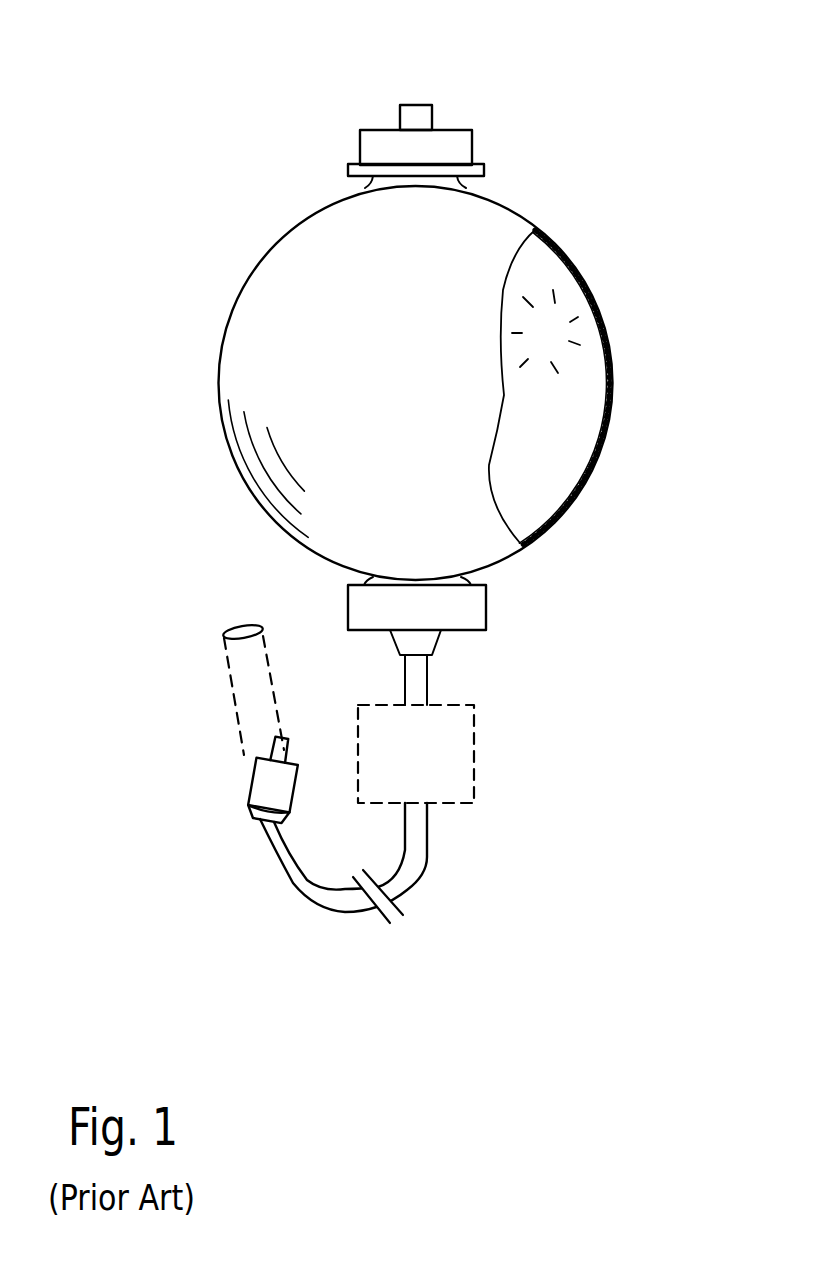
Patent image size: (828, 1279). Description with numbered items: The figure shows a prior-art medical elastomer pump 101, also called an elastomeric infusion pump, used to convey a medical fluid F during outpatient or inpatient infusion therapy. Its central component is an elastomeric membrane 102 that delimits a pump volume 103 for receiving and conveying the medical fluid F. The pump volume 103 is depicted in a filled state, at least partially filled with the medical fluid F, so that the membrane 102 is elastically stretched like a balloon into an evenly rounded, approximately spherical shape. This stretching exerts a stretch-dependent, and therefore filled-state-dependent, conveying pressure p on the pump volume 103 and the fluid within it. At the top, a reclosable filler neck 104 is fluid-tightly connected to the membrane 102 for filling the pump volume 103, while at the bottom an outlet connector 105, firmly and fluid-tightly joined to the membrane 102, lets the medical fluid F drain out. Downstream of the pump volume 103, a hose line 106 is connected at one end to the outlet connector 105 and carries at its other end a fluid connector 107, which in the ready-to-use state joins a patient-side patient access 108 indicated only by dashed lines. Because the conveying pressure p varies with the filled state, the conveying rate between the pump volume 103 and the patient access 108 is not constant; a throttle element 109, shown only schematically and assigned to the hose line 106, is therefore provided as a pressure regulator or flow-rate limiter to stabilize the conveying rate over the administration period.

The medical elastomer pump 101 is at (402, 464).
The elastomeric membrane 102 is at (572, 258).
The pump volume 103 is at (558, 477).
The reclosable filler neck 104 is at (483, 109).
The outlet connector 105 is at (506, 601).
The hose line 106 is at (420, 880).
The fluid connector 107 is at (262, 786).
The patient access 108 is at (233, 700).
The throttle element 109 is at (475, 773).
The medical fluid F is at (582, 400).
The conveying pressure p is at (546, 331).